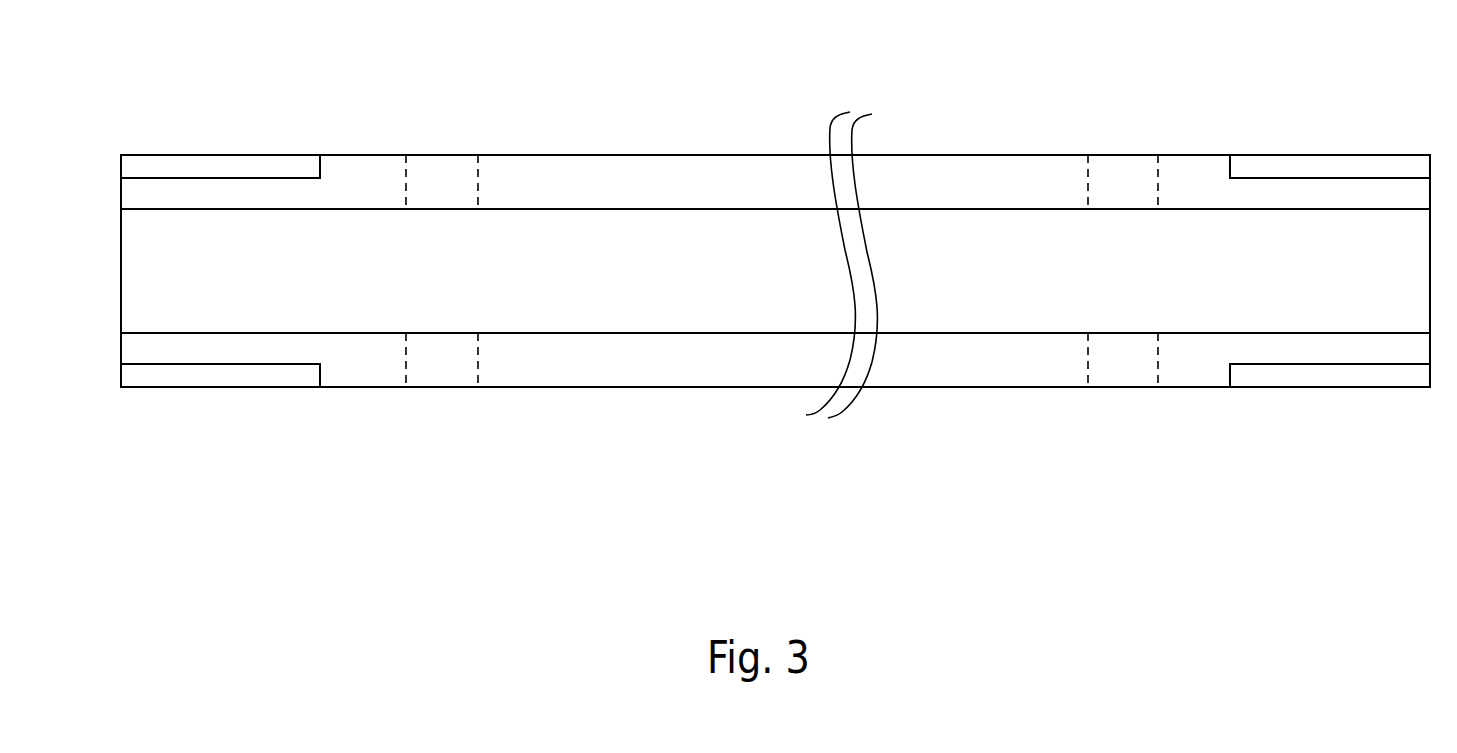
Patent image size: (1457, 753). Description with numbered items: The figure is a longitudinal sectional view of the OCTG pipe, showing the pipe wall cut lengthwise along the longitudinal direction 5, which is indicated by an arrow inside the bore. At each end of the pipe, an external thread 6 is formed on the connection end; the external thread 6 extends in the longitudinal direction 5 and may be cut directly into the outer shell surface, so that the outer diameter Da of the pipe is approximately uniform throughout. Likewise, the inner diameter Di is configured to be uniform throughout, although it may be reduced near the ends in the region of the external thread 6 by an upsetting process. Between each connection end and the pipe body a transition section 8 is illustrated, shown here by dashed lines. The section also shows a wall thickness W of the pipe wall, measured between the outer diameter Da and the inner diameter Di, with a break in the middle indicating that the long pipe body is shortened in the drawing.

The longitudinal direction 5 is at (788, 288).
The external thread 6 is at (220, 167).
The transition section 8 is at (437, 175).
The wall thickness W is at (601, 248).
The outer diameter Da is at (897, 155).
The inner diameter Di is at (960, 209).